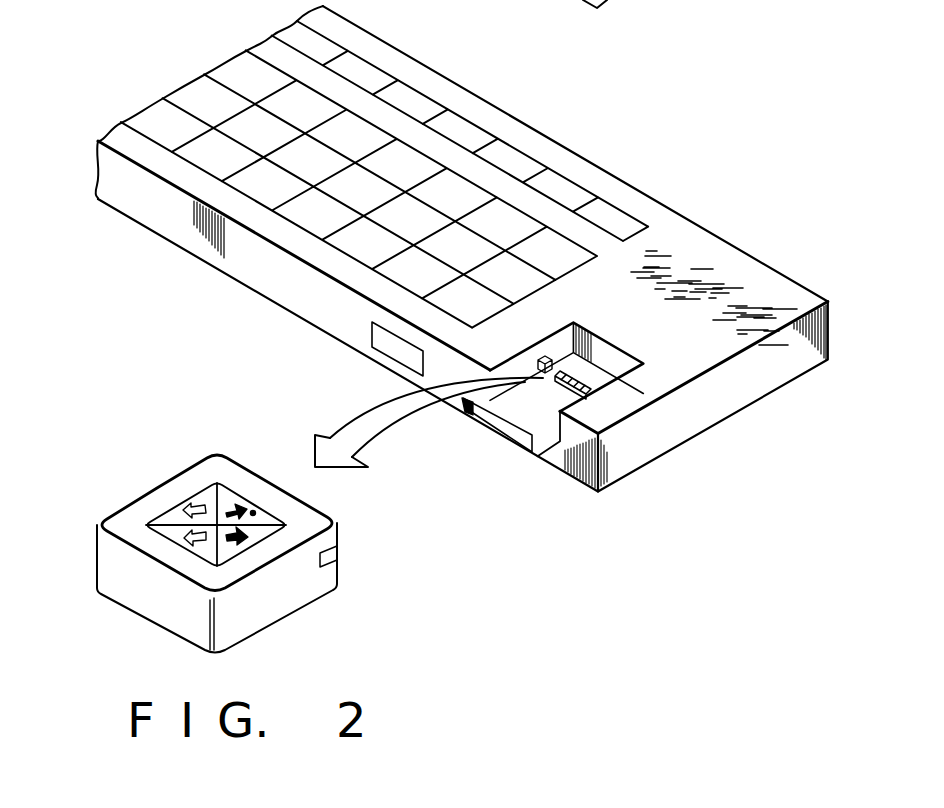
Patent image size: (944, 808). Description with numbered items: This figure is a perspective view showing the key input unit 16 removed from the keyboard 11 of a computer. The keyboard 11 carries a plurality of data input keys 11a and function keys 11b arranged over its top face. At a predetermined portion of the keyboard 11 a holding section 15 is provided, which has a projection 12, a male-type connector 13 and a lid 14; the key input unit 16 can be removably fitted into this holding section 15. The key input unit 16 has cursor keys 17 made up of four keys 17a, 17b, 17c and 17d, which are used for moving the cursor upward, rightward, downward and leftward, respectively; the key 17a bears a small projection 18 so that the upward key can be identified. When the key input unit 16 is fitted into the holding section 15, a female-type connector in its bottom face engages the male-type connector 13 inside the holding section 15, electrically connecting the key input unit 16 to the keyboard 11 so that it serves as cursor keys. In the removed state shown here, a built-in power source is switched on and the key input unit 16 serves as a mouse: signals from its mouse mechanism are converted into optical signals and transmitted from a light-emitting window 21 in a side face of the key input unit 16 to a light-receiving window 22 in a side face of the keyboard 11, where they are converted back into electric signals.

The keyboard 11 is at (620, 182).
The data input keys 11a is at (226, 126).
The function keys 11b is at (368, 70).
The projection 12 is at (543, 357).
The male-type connector 13 is at (596, 379).
The lid 14 is at (507, 441).
The holding section 15 is at (562, 400).
The key input unit 16 is at (97, 563).
The cursor keys 17 is at (197, 498).
The key 17a is at (273, 517).
The key 17b is at (232, 552).
The key 17c is at (200, 547).
The key 17d is at (163, 513).
The small projection 18 is at (253, 511).
The light-emitting window 21 is at (327, 577).
The light-receiving window 22 is at (386, 349).